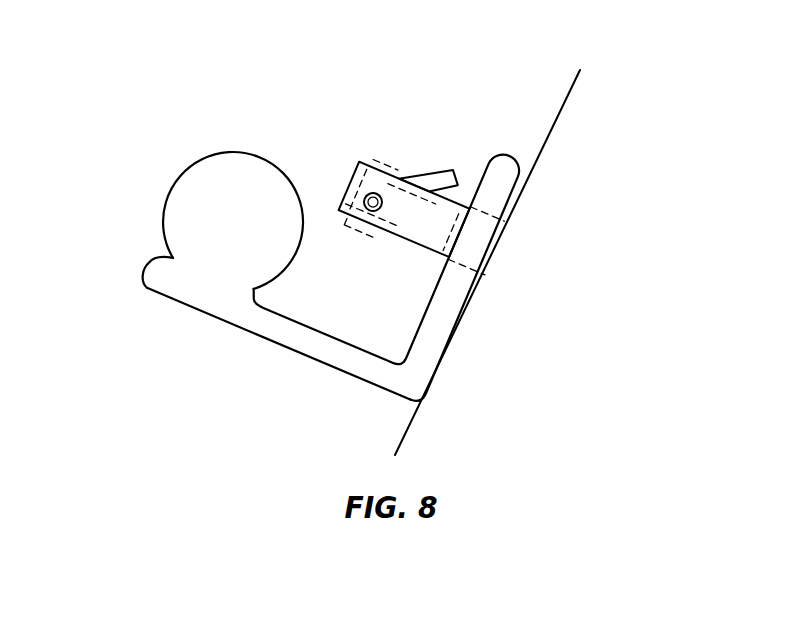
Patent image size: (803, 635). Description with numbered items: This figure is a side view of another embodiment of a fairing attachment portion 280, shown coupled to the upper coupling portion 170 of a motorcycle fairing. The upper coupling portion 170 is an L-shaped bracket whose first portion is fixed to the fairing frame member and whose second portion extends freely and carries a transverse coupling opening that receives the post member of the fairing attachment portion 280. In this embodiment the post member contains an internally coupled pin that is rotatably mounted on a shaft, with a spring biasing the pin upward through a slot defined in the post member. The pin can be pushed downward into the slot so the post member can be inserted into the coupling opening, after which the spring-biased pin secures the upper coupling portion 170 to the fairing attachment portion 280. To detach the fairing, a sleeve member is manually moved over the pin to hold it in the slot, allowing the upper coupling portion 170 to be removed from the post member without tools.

The upper coupling portion 170 is at (345, 233).
The fairing attachment portion 280 is at (394, 173).